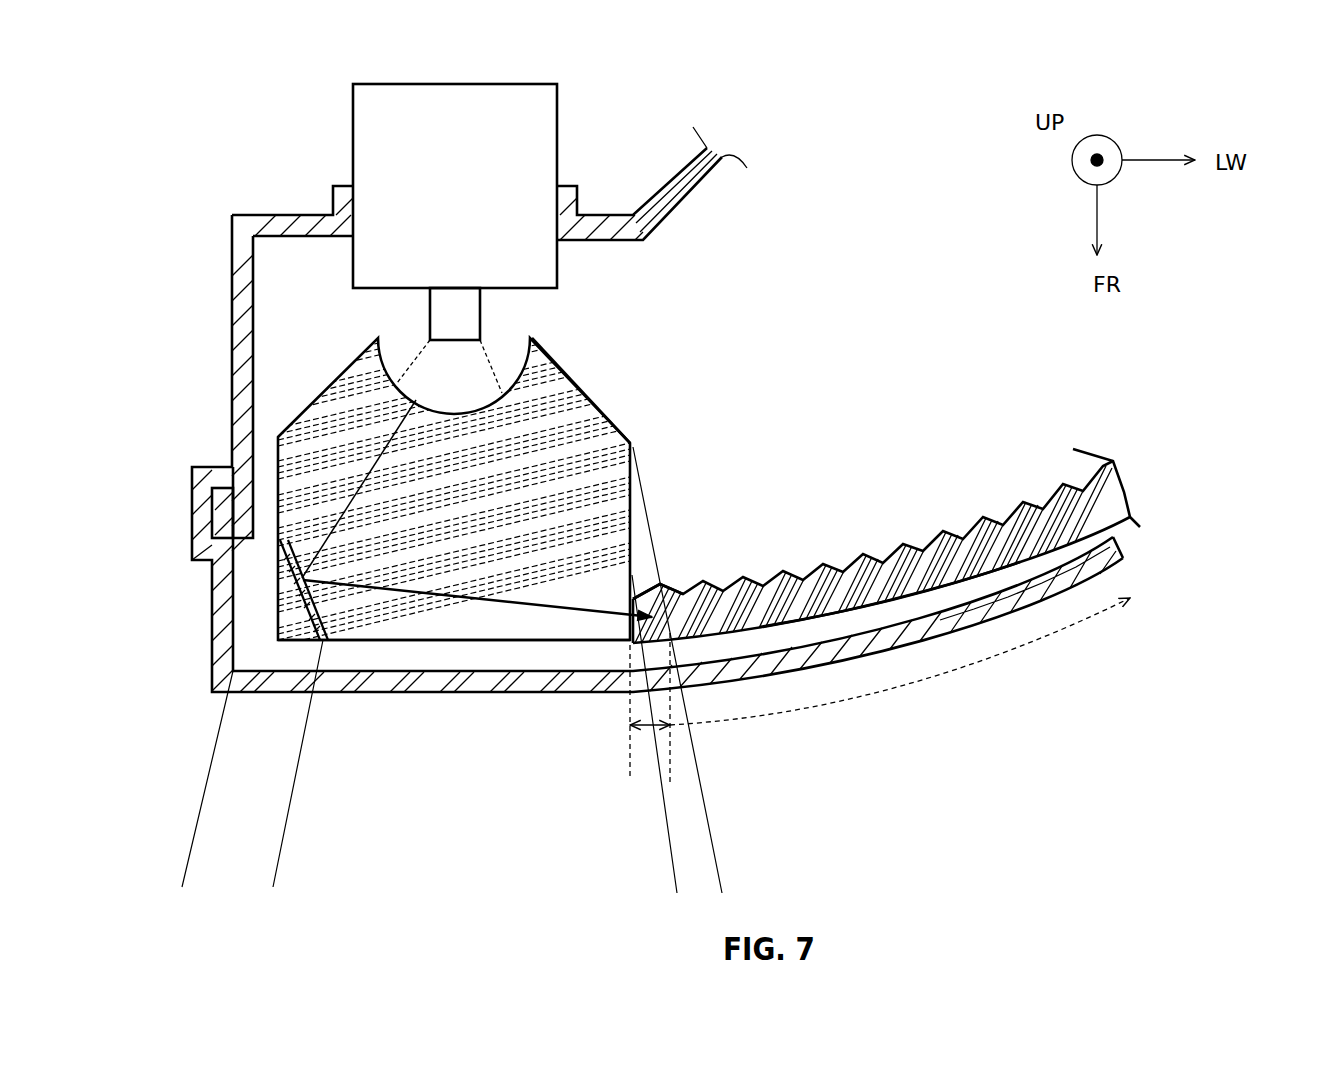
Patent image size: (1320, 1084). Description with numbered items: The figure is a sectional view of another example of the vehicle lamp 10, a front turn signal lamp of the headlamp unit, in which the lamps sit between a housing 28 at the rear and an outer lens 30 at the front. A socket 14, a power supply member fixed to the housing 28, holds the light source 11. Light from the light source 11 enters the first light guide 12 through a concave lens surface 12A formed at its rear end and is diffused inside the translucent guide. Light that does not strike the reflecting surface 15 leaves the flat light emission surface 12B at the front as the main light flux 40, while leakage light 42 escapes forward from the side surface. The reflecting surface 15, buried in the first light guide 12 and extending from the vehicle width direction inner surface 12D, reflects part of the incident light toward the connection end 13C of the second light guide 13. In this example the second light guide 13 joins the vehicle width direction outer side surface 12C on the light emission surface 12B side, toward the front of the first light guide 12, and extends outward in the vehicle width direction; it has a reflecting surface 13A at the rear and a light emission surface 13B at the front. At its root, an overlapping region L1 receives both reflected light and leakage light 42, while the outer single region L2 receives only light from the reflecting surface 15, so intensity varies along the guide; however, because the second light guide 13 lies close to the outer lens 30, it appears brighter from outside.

The vehicle lamp 10 is at (850, 190).
The light source 11 is at (483, 312).
The first light guide 12 is at (590, 388).
The lens surface 12A is at (402, 385).
The light emission surface 12B is at (535, 642).
The vehicle width direction outer side surface 12C is at (622, 420).
The vehicle width direction inner surface 12D is at (231, 462).
The second light guide 13 is at (987, 513).
The reflecting surface 13A is at (797, 570).
The light emission surface 13B is at (913, 600).
The connection end 13C is at (652, 557).
The socket 14 is at (353, 130).
The reflecting surface 15 is at (353, 593).
The housing 28 is at (232, 263).
The outer lens 30 is at (1057, 587).
The main light flux 40 is at (673, 845).
The leakage light 42 is at (720, 872).
The overlapping region L1 is at (657, 727).
The single region L2 is at (803, 710).